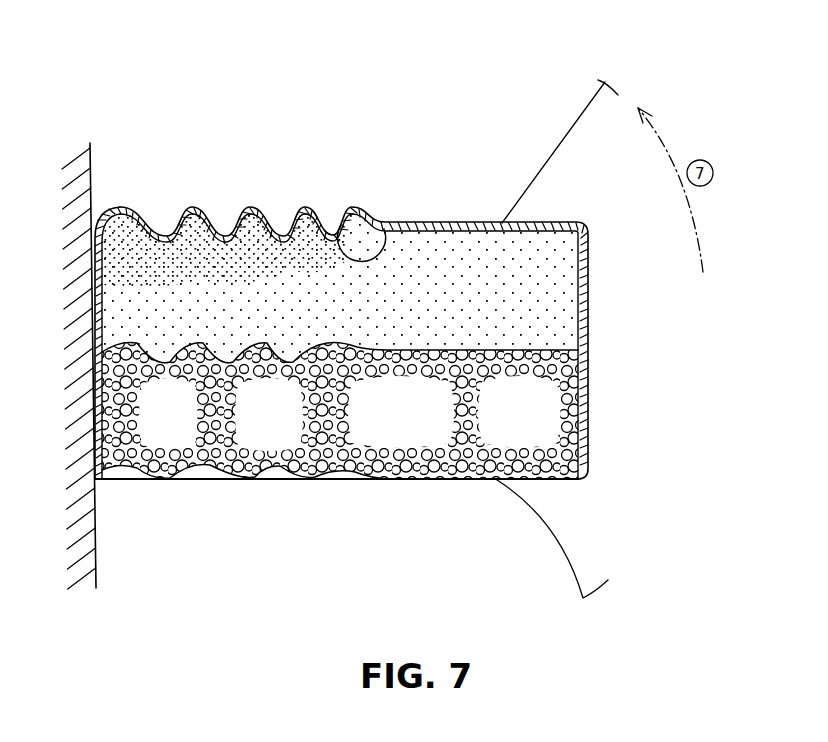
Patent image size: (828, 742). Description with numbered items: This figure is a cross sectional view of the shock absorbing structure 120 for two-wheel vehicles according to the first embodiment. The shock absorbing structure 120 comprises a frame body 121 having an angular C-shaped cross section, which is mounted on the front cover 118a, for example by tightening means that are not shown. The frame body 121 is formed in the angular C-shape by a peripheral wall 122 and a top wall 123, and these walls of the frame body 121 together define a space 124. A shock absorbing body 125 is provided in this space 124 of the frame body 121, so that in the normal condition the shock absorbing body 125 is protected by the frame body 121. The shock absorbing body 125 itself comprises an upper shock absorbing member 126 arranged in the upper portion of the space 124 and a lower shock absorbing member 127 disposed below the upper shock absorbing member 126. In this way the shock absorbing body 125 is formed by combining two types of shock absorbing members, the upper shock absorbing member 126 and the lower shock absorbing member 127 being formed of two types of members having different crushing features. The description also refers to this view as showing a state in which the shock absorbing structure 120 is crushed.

The front cover 118a is at (570, 163).
The shock absorbing structure 120 is at (467, 120).
The frame body 121 is at (300, 97).
The peripheral wall 122 is at (92, 283).
The top wall 123 is at (268, 208).
The space 124 is at (387, 222).
The shock absorbing body 125 is at (400, 577).
The upper shock absorbing member 126 is at (244, 312).
The lower shock absorbing member 127 is at (385, 427).